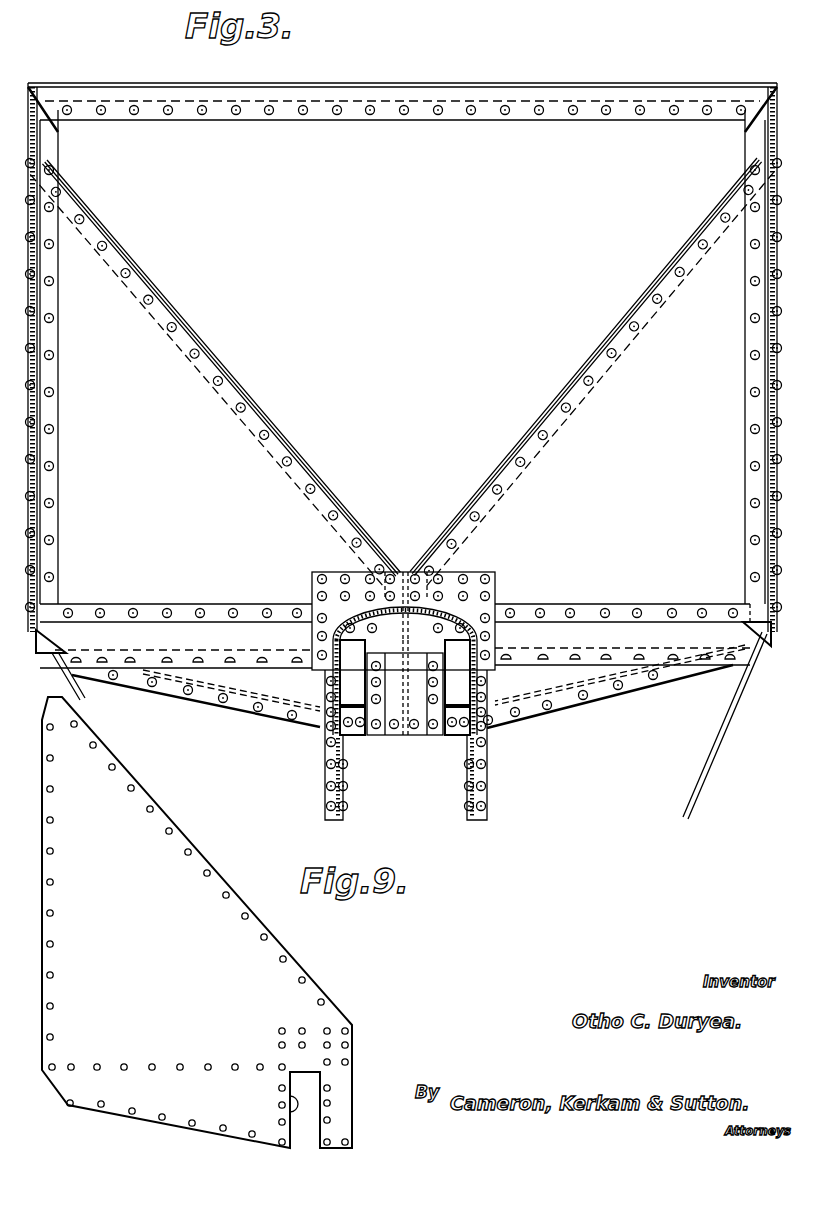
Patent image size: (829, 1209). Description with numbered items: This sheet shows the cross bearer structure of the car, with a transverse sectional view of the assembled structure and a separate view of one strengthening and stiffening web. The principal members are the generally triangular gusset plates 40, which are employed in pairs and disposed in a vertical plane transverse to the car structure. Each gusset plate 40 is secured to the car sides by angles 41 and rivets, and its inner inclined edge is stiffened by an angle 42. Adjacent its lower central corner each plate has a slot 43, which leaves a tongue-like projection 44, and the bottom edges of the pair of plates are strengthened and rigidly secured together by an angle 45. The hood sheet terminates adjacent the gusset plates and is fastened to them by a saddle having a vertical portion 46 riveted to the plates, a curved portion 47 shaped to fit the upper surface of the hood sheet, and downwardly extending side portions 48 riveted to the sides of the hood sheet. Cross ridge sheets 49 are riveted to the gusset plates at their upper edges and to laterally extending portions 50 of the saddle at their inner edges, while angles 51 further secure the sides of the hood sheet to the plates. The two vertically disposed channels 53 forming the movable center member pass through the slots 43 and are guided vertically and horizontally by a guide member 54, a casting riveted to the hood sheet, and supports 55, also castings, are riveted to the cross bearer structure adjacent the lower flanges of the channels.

In FIG. 3, the gusset plate 40 is at (402, 258).
In FIG. 9, the gusset plate 40 is at (197, 922).
In FIG. 3, the angles 41 is at (60, 405).
In FIG. 3, the angles 42 is at (182, 313).
In FIG. 9, the slot 43 is at (288, 1100).
In FIG. 9, the tongue-like projection 44 is at (338, 1110).
In FIG. 3, the angle 45 is at (201, 697).
In FIG. 3, the vertical portion of saddle 46 is at (453, 572).
In FIG. 3, the curved portion of saddle 47 is at (486, 597).
In FIG. 3, the side portions of saddle 48 is at (318, 652).
In FIG. 3, the cross ridge sheets 49 is at (143, 635).
In FIG. 3, the laterally extending portions of saddle 50 is at (326, 690).
In FIG. 3, the angles 51 is at (278, 704).
In FIG. 3, the channels 53 is at (362, 693).
In FIG. 3, the guide member 54 is at (405, 677).
In FIG. 3, the supports 55 is at (462, 735).